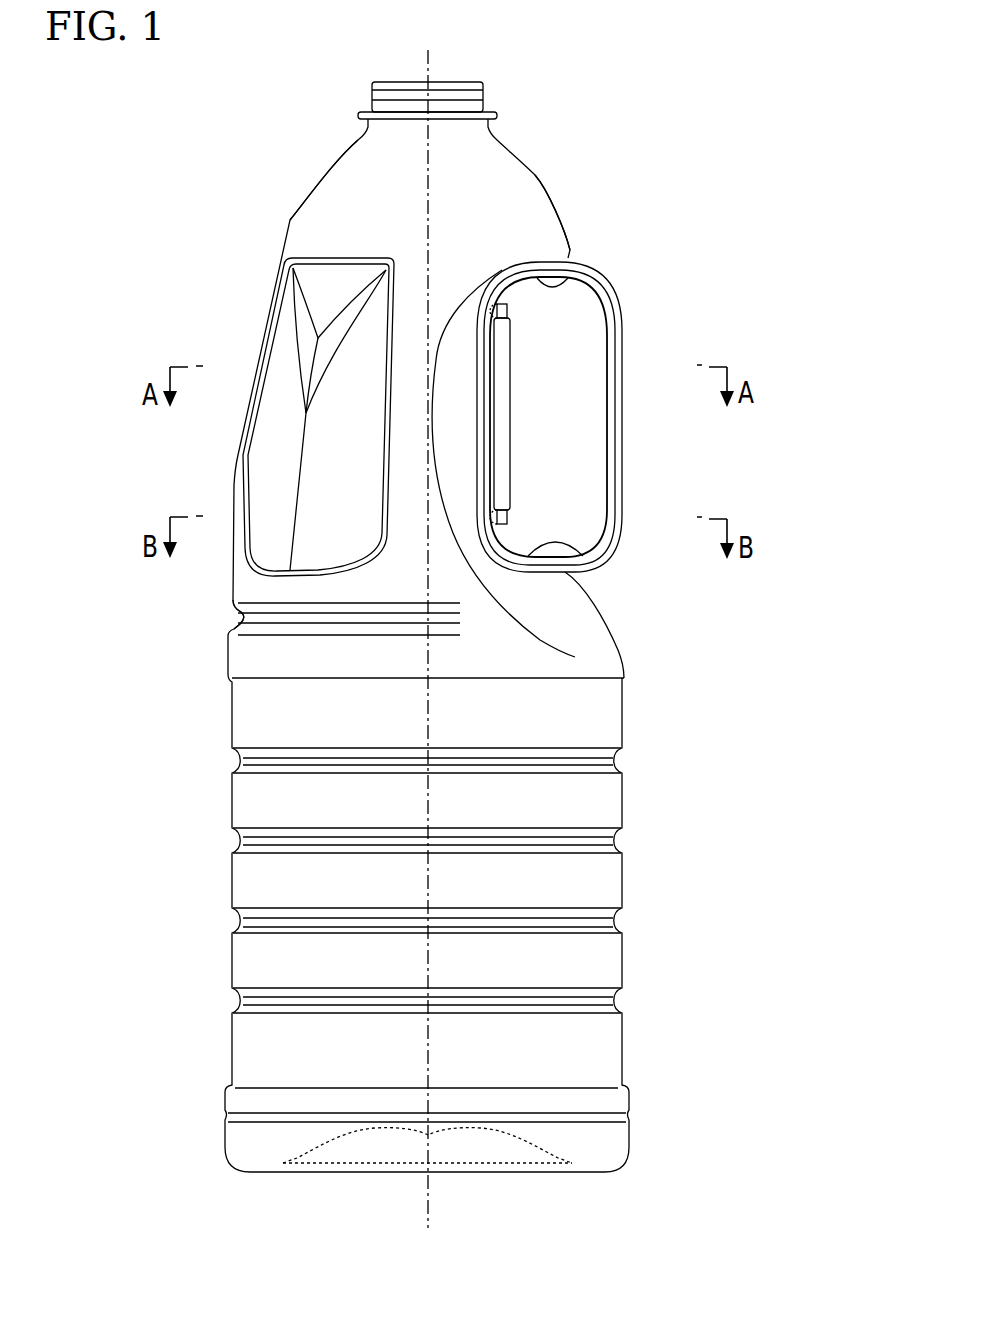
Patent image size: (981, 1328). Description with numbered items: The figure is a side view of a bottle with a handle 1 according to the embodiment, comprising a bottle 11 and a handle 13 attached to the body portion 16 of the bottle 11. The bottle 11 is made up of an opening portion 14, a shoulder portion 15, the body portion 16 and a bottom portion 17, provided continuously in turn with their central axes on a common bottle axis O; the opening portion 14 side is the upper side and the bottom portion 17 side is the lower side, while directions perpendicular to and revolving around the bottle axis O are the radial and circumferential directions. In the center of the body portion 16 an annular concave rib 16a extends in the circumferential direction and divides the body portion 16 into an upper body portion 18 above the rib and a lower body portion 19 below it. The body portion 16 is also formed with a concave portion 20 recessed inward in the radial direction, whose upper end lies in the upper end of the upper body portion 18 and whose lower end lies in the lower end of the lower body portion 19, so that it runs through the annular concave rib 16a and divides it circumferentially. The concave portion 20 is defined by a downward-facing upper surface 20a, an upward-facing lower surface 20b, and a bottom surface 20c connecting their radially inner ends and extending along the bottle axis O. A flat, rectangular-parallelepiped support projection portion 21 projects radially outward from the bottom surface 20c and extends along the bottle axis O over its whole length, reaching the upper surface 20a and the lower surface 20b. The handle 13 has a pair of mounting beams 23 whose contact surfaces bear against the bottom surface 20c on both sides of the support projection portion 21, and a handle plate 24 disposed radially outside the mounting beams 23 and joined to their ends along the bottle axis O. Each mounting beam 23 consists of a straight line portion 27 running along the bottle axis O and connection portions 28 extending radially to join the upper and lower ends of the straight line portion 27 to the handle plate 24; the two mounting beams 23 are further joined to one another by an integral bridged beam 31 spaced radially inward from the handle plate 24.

The bottle with a handle 1 is at (722, 70).
The bottle 11 is at (541, 172).
The handle 13 is at (603, 258).
The opening portion 14 is at (372, 106).
The shoulder portion 15 is at (338, 157).
The body portion 16 is at (200, 603).
The annular concave rib 16a is at (243, 617).
The bottom portion 17 is at (272, 1172).
The upper body portion 18 is at (253, 323).
The lower body portion 19 is at (231, 882).
The concave portion 20 is at (600, 590).
The upper surface 20a is at (577, 257).
The lower surface 20b is at (522, 551).
The bottom surface 20c is at (478, 437).
The support projection portion 21 is at (512, 407).
The mounting beams 23 is at (95, 204).
The handle plate 24 is at (622, 460).
The straight line portion 27 is at (477, 398).
The connection portion 28 is at (502, 275).
The bridged beam 31 is at (508, 313).
The bottle axis O is at (428, 62).